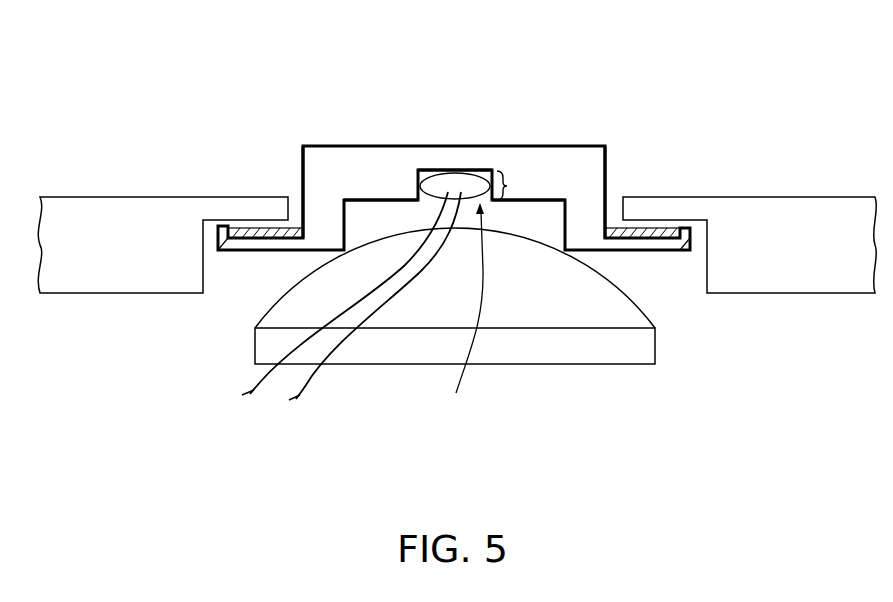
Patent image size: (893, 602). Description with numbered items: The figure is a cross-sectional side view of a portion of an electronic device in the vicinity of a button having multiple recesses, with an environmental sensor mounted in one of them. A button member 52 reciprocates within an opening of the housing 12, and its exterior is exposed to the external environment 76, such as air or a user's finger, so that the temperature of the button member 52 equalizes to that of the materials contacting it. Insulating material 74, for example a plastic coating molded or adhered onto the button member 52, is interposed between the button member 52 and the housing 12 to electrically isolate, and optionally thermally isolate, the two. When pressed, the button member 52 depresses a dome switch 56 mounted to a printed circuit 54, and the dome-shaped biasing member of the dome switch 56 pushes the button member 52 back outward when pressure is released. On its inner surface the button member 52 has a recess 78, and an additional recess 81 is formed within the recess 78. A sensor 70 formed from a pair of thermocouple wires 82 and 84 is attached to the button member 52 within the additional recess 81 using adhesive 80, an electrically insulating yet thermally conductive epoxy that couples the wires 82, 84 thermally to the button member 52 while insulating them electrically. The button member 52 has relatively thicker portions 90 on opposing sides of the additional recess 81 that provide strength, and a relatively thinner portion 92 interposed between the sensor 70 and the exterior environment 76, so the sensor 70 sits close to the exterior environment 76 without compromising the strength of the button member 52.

The external environment 76 is at (457, 41).
The housing 12 is at (107, 215).
The button member 52 is at (356, 158).
The relatively thicker portions 90 is at (316, 158).
The recess 78 is at (377, 201).
The relatively thinner portion 92 is at (441, 158).
The adhesive 80 is at (472, 189).
The sensor 70 is at (516, 185).
The insulating material 74 is at (243, 232).
The dome switch 56 is at (622, 310).
The printed circuit 54 is at (548, 348).
The thermocouple wire 82 is at (248, 385).
The thermocouple wire 84 is at (300, 393).
The additional recess 81 is at (463, 313).